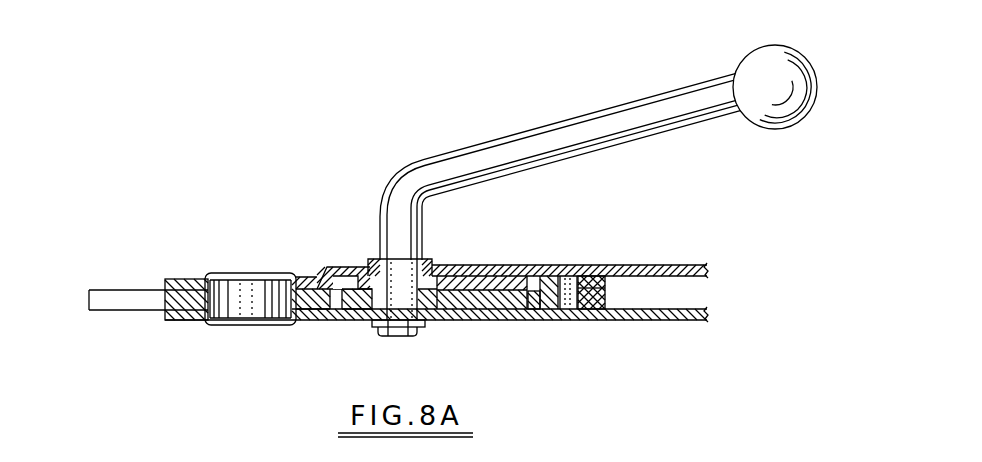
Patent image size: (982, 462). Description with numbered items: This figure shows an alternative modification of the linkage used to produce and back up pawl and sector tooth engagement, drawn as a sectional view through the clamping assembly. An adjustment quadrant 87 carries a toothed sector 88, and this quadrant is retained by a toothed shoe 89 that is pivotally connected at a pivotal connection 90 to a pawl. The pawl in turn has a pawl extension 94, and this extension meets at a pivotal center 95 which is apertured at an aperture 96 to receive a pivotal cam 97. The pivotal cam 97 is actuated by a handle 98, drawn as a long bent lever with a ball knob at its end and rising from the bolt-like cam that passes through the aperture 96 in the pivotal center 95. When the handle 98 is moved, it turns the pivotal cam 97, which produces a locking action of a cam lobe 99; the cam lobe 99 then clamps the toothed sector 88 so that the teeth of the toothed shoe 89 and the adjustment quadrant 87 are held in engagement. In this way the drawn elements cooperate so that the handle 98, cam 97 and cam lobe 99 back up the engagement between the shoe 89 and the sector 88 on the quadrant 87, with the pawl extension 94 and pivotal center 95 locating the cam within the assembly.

The adjustment quadrant 87 is at (318, 299).
The toothed sector 88 is at (548, 304).
The toothed shoe 89 is at (593, 304).
The pivotal connection 90 is at (567, 299).
The pawl extension 94 is at (510, 280).
The pivotal center 95 is at (323, 277).
The aperture 96 is at (378, 280).
The pivotal cam 97 is at (362, 304).
The handle 98 is at (648, 110).
The cam lobe 99 is at (470, 293).